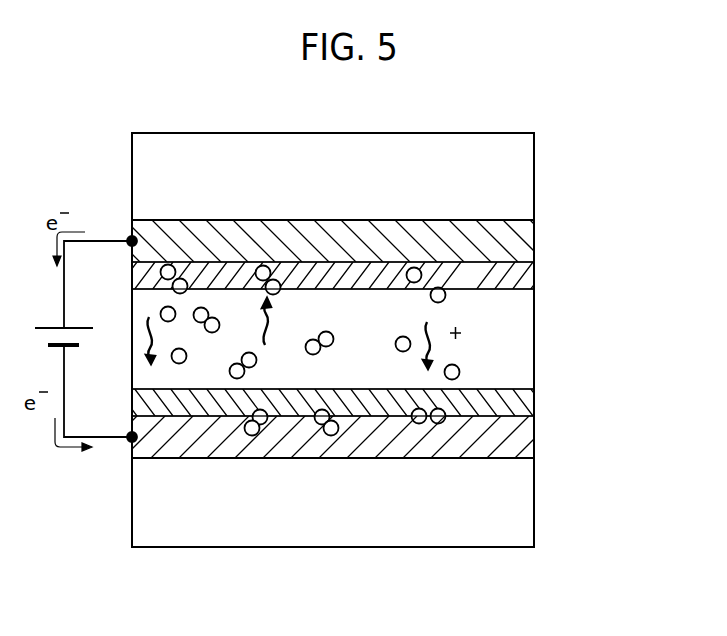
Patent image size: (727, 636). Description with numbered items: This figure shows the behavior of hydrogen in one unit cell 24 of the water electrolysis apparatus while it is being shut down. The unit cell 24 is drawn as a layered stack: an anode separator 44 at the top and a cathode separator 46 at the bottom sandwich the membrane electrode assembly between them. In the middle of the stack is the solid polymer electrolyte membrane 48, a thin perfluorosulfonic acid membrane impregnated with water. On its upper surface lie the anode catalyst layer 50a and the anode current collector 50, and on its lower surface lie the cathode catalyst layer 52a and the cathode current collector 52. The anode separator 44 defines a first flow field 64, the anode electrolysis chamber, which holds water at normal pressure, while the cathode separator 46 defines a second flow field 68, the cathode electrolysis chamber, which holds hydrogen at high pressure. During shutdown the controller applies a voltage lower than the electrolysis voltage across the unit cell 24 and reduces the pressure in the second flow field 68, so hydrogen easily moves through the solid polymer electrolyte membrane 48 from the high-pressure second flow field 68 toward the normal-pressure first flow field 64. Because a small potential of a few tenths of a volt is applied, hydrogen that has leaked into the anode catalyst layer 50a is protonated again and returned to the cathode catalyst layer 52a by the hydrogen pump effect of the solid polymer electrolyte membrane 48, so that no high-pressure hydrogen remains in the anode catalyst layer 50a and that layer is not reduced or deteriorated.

The unit cell 24 is at (546, 93).
The anode separator 44 is at (538, 167).
The cathode separator 46 is at (535, 512).
The solid polymer electrolyte membrane 48 is at (522, 332).
The anode current collector 50 is at (520, 248).
The anode catalyst layer 50a is at (522, 280).
The cathode current collector 52 is at (522, 440).
The cathode catalyst layer 52a is at (522, 404).
The first flow field 64 is at (442, 160).
The second flow field 68 is at (441, 520).